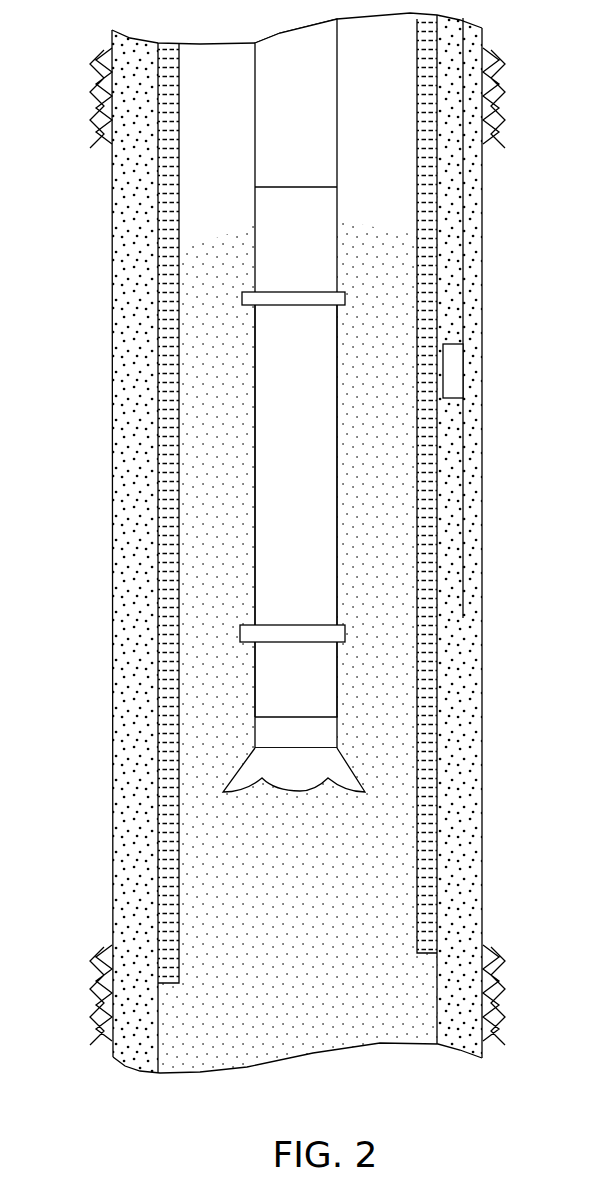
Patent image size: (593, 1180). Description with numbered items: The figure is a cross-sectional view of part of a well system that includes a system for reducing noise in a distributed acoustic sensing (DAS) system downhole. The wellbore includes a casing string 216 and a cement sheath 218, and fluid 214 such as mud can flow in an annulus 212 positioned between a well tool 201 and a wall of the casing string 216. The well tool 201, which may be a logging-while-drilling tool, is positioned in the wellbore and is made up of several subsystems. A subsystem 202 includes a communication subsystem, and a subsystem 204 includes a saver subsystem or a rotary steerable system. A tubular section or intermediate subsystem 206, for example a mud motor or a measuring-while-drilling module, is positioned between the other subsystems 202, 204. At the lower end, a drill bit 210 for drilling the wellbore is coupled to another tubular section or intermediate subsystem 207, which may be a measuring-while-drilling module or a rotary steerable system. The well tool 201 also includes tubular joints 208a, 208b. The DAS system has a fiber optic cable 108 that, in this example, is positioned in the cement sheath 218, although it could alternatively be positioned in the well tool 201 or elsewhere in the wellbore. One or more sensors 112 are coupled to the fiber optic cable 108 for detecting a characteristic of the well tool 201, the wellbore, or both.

The fiber optic cable 108 is at (462, 223).
The sensor 112 is at (450, 377).
The well tool 201 is at (253, 118).
The subsystem 202 is at (272, 208).
The subsystem 204 is at (266, 685).
The intermediate subsystem 206 is at (272, 355).
The intermediate subsystem 207 is at (325, 728).
The tubular joint 208a is at (235, 297).
The tubular joint 208b is at (240, 633).
The drill bit 210 is at (310, 790).
The annulus 212 is at (193, 183).
The fluid 214 is at (398, 893).
The casing string 216 is at (172, 477).
The cement sheath 218 is at (127, 560).